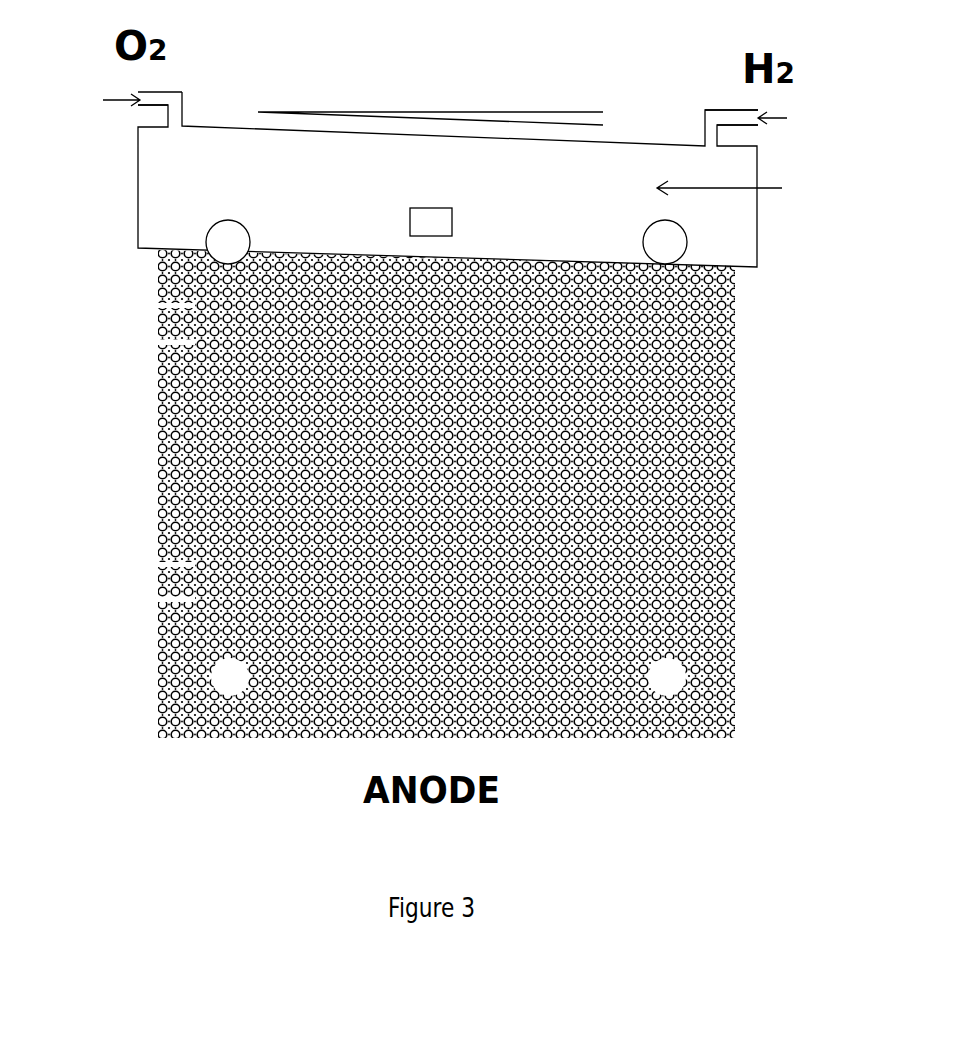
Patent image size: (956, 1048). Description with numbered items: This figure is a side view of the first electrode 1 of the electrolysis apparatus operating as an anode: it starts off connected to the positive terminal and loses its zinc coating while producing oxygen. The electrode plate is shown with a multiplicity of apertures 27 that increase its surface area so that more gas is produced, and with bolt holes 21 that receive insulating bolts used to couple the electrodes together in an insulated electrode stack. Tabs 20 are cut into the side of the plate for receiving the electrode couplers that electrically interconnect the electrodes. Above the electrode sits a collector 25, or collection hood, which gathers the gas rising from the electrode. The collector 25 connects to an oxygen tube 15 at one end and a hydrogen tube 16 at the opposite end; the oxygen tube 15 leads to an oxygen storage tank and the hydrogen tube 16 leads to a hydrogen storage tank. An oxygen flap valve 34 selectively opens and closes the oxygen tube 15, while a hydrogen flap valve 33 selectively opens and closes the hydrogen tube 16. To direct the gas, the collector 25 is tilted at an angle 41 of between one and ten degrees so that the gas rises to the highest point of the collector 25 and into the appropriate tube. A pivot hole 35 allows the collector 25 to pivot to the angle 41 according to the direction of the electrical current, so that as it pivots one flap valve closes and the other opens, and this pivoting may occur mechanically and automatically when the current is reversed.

The first electrode 1 is at (451, 494).
The oxygen tube 15 is at (96, 100).
The hydrogen tube 16 is at (790, 120).
The tabs 20 is at (166, 327).
The bolt holes 21 is at (222, 683).
The collector 25 is at (747, 189).
The apertures 27 is at (727, 482).
The hydrogen flap valve 33 is at (706, 145).
The oxygen flap valve 34 is at (183, 125).
The pivot hole 35 is at (430, 208).
The angle 41 is at (534, 116).